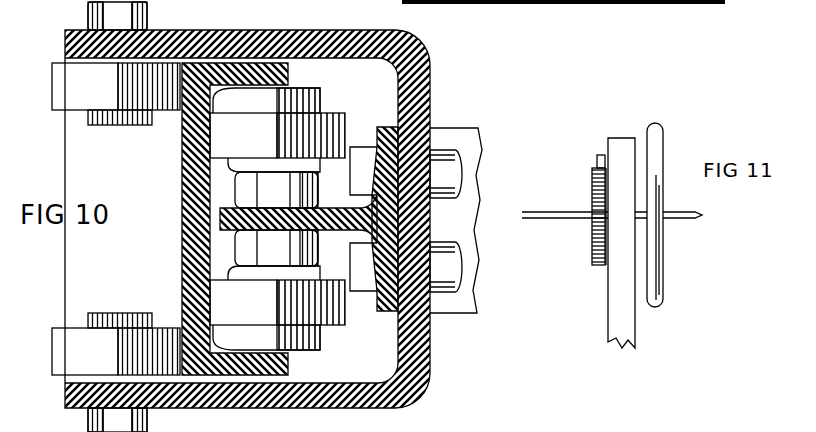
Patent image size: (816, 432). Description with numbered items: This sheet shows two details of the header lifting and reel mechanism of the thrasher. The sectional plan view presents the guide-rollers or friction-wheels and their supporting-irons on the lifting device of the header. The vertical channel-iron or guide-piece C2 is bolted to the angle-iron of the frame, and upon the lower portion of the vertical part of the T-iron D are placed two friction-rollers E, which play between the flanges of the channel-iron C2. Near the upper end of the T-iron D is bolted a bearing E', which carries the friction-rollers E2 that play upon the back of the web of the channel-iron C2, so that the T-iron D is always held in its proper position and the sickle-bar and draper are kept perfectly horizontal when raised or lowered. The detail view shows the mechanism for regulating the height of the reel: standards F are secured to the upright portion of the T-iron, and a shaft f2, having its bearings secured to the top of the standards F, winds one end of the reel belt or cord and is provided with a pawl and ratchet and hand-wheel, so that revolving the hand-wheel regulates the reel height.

In FIG. 10, the bearing E' is at (264, 231).
In FIG. 10, the channel-iron C2 is at (183, 150).
In FIG. 10, the friction-rollers E2 is at (116, 217).
In FIG. 10, the friction-rollers E is at (277, 219).
In FIG. 10, the T-iron D is at (378, 127).
In FIG. 11, the standards F is at (627, 235).
In FIG. 11, the shaft f2 is at (700, 216).